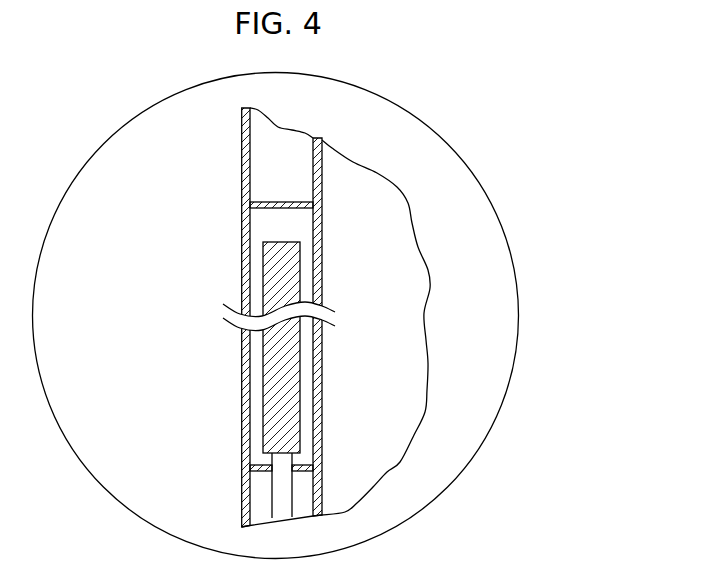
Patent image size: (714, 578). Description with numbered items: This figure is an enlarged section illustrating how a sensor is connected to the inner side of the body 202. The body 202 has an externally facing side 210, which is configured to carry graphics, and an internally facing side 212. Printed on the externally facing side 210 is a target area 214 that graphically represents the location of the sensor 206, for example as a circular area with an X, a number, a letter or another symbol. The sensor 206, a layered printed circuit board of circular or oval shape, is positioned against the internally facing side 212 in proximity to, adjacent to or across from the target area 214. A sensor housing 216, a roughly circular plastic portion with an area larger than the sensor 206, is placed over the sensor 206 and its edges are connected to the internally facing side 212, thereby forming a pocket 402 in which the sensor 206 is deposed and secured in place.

The body 202 is at (122, 89).
The sensor 206 is at (284, 236).
The externally facing side 210 is at (242, 167).
The internally facing side 212 is at (252, 138).
The target area 214 is at (242, 270).
The sensor housing 216 is at (322, 378).
The pocket 402 is at (288, 218).